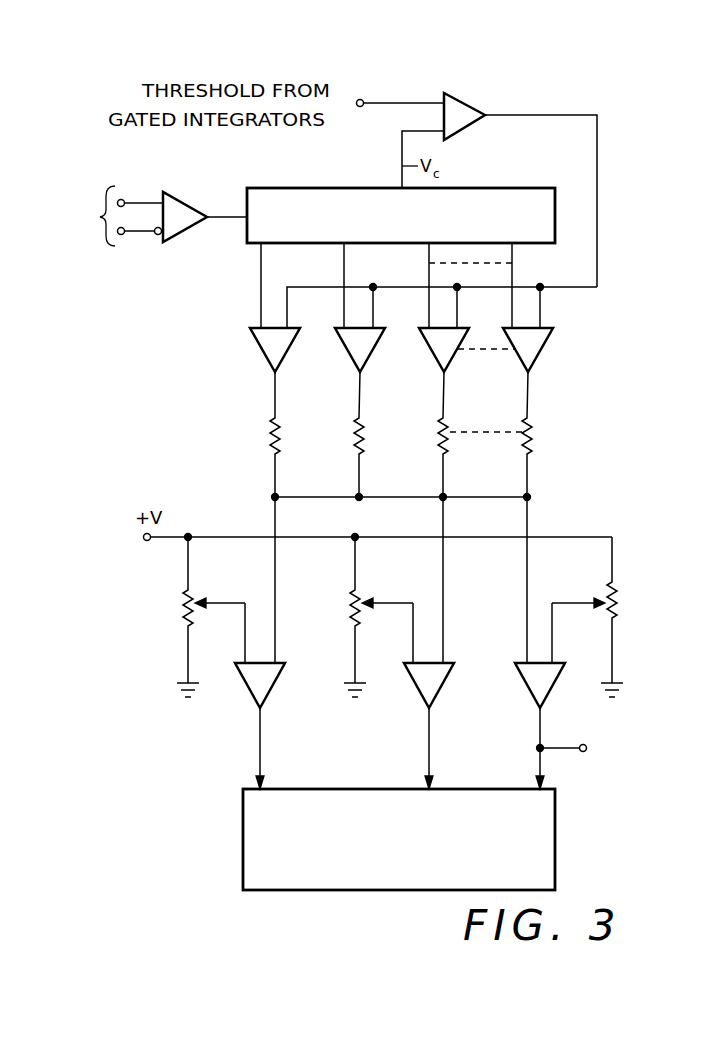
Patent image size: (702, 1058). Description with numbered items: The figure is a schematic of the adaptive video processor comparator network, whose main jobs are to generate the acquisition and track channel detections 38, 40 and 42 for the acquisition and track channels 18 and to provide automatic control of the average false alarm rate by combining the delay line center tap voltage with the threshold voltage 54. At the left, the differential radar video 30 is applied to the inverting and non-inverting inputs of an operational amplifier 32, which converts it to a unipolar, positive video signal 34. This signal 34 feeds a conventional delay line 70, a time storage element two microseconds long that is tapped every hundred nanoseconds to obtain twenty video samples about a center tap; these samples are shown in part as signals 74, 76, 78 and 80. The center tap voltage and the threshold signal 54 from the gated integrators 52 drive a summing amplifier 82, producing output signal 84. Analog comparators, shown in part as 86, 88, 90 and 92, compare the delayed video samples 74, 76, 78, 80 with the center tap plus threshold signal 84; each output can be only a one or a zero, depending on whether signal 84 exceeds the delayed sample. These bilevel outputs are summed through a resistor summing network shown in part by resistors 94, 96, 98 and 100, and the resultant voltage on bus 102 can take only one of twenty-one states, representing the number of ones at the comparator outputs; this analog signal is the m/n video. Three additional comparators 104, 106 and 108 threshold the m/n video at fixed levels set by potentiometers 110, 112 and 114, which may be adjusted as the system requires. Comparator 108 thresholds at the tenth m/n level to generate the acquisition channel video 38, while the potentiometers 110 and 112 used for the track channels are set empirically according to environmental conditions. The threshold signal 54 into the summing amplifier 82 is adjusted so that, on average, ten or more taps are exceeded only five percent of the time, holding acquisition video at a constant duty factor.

The acquisition and track channel module 18 is at (555, 861).
The differential video signals 30 is at (115, 216).
The operational amplifier 32 is at (186, 235).
The video signal 34 is at (222, 214).
The acquisition channel detection signal 38 is at (536, 785).
The track channel detection signal 40 is at (427, 741).
The track channel detection signal 42 is at (258, 741).
The gated integrators 52 is at (348, 116).
The threshold voltage 54 is at (425, 103).
The delay line 70 is at (340, 188).
The delayed video sample 74 is at (261, 278).
The delayed video sample 76 is at (344, 272).
The delayed video sample 78 is at (429, 258).
The delayed video sample 80 is at (512, 261).
The summing amplifier 82 is at (470, 97).
The output signal 84 is at (612, 157).
The analog comparator 86 is at (257, 346).
The analog comparator 88 is at (348, 341).
The analog comparator 90 is at (431, 344).
The analog comparator 92 is at (548, 339).
The resistor 94 is at (282, 422).
The resistor 96 is at (366, 422).
The resistor 98 is at (450, 422).
The resistor 100 is at (533, 423).
The bus 102 is at (529, 495).
The comparator 104 is at (272, 690).
The comparator 106 is at (440, 690).
The comparator 108 is at (517, 673).
The potentiometer 110 is at (185, 594).
The potentiometer 112 is at (352, 594).
The potentiometer 114 is at (605, 614).